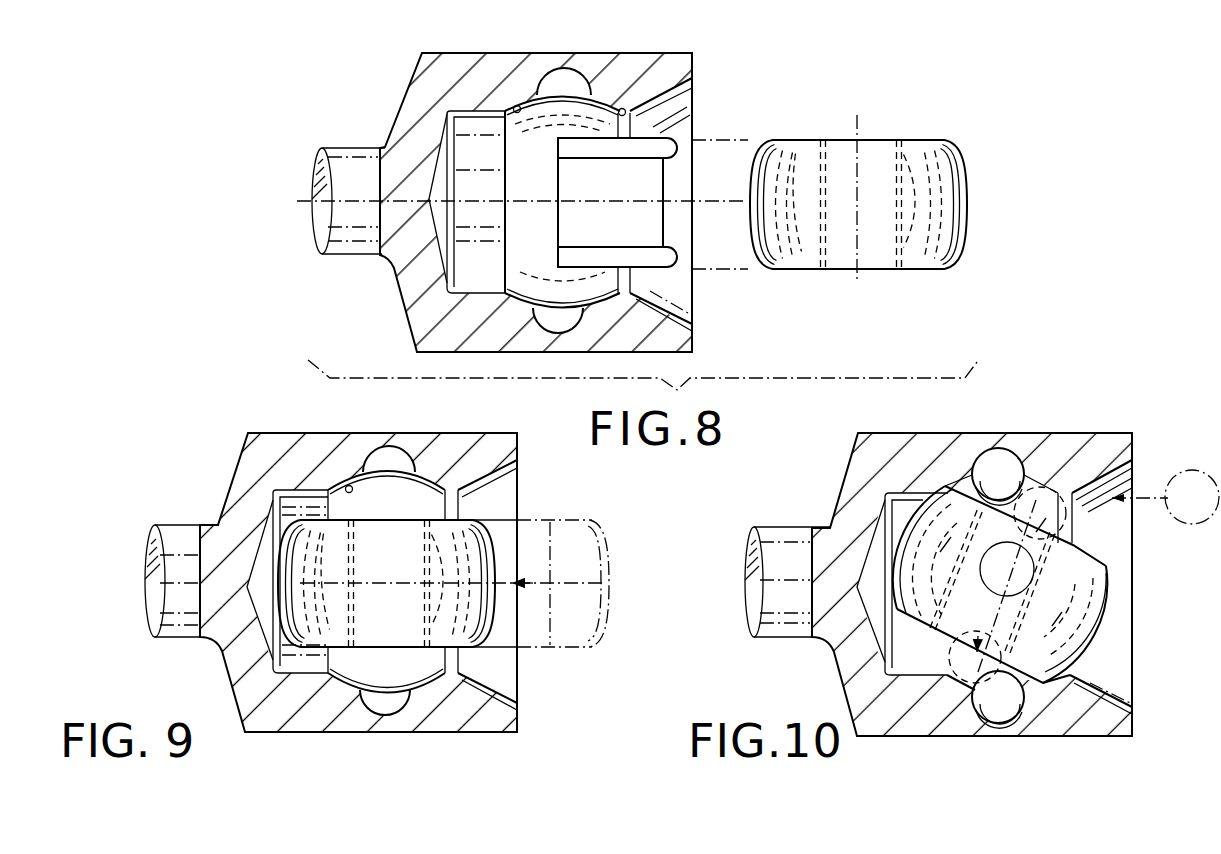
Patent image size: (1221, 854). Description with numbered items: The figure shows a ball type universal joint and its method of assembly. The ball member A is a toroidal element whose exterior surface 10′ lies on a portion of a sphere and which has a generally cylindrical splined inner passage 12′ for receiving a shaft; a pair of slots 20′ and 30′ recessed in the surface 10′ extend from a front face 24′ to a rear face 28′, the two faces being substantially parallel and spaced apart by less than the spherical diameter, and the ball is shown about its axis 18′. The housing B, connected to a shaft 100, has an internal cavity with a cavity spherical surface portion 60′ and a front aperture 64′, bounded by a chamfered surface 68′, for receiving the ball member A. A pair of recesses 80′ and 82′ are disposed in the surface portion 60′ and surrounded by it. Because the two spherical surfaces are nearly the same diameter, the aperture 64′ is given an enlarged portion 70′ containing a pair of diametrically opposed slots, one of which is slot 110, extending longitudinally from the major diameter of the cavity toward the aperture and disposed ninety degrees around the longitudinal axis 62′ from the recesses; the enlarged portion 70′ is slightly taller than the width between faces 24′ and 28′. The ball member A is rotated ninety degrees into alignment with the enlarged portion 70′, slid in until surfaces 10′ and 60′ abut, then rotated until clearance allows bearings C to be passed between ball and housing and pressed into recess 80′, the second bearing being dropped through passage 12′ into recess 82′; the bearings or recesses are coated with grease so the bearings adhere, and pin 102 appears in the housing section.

In FIG. 8, the shaft 100 is at (350, 163).
In FIG. 9, the shaft 100 is at (182, 528).
In FIG. 10, the shaft 100 is at (788, 543).
In FIG. 8, the cavity spherical surface portion 60′ is at (514, 106).
In FIG. 9, the cavity spherical surface portion 60′ is at (348, 484).
In FIG. 8, the recess 80′ is at (553, 80).
In FIG. 9, the recess 80′ is at (393, 448).
In FIG. 10, the recess 80′ is at (998, 458).
In FIG. 8, the pivot pin 102 is at (621, 108).
In FIG. 8, the chamfered surface 68′ is at (693, 83).
In FIG. 8, the front aperture 64′ is at (669, 129).
In FIG. 9, the front aperture 64′ is at (526, 664).
In FIG. 8, the longitudinal axis 62′ is at (697, 200).
In FIG. 8, the slot 110 is at (621, 233).
In FIG. 8, the recess 82′ is at (577, 320).
In FIG. 9, the recess 82′ is at (402, 695).
In FIG. 10, the recess 82′ is at (993, 720).
In FIG. 8, the enlarged portion 70′ is at (678, 240).
In FIG. 8, the slot 20′ is at (758, 205).
In FIG. 8, the front face 24′ is at (788, 162).
In FIG. 8, the ring axis 18′ is at (881, 171).
In FIG. 8, the exterior surface 10′ is at (870, 183).
In FIG. 9, the exterior surface 10′ is at (288, 630).
In FIG. 8, the slot 30′ is at (982, 205).
In FIG. 8, the splined inner passage 12′ is at (861, 223).
In FIG. 10, the splined inner passage 12′ is at (948, 636).
In FIG. 8, the rear face 28′ is at (937, 228).
In FIG. 8, the ball member A is at (918, 127).
In FIG. 9, the ball member A is at (394, 582).
In FIG. 10, the ball member A is at (1056, 587).
In FIG. 8, the housing B is at (423, 68).
In FIG. 9, the housing B is at (493, 452).
In FIG. 10, the housing B is at (870, 466).
In FIG. 10, the bearings C is at (1007, 588).